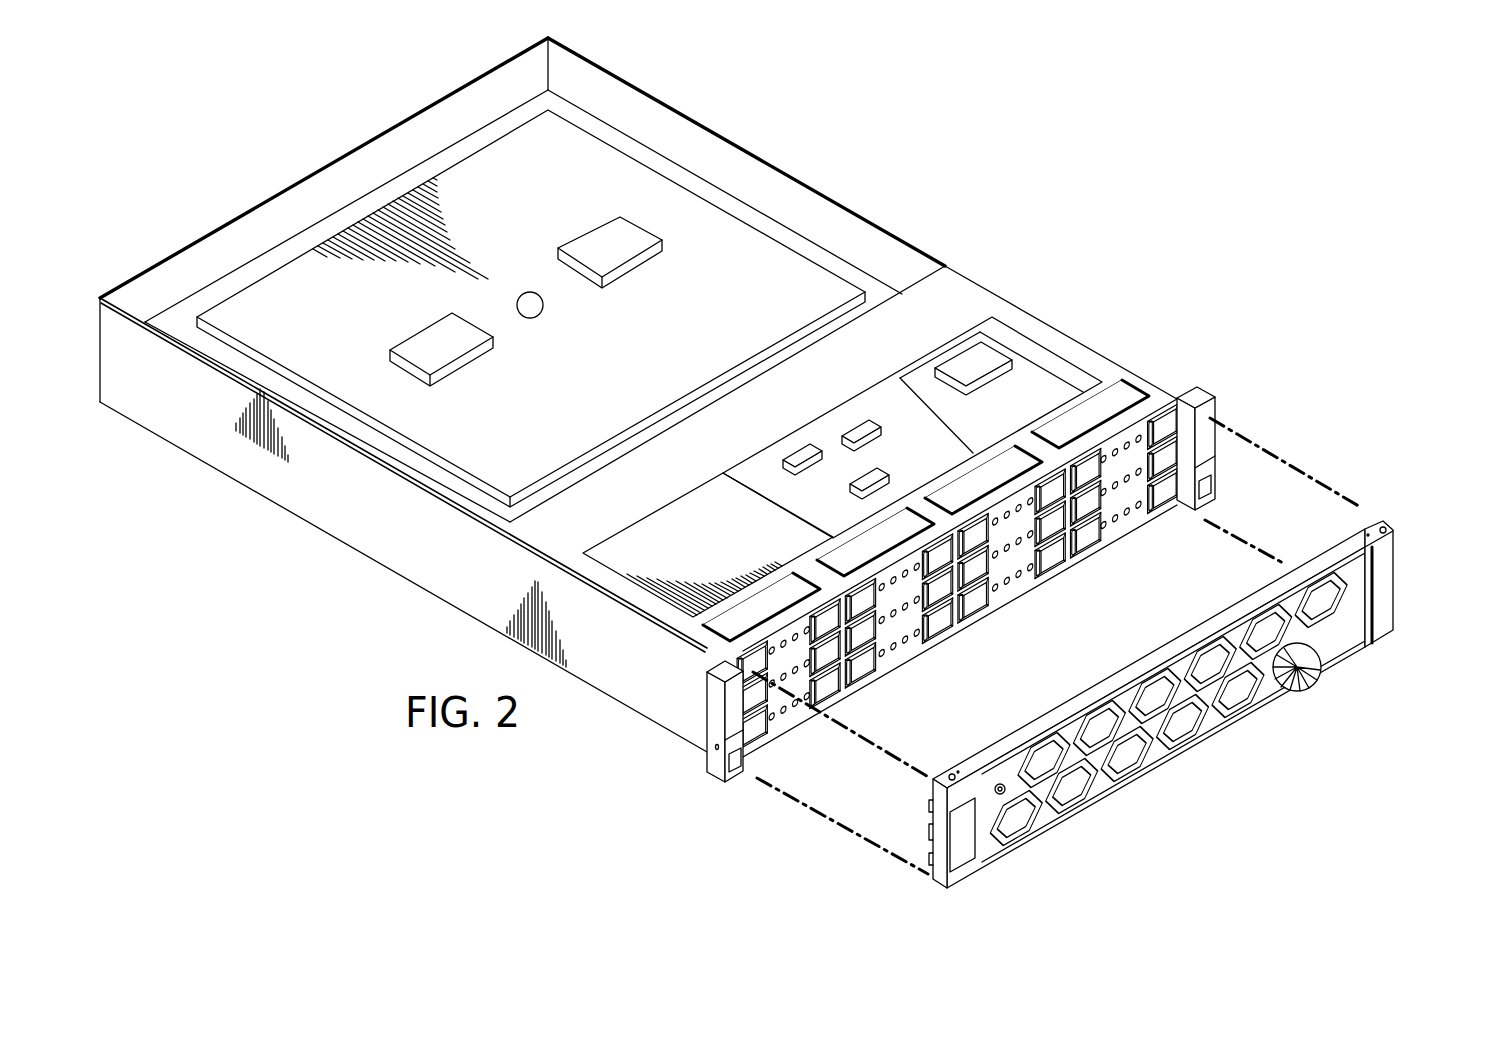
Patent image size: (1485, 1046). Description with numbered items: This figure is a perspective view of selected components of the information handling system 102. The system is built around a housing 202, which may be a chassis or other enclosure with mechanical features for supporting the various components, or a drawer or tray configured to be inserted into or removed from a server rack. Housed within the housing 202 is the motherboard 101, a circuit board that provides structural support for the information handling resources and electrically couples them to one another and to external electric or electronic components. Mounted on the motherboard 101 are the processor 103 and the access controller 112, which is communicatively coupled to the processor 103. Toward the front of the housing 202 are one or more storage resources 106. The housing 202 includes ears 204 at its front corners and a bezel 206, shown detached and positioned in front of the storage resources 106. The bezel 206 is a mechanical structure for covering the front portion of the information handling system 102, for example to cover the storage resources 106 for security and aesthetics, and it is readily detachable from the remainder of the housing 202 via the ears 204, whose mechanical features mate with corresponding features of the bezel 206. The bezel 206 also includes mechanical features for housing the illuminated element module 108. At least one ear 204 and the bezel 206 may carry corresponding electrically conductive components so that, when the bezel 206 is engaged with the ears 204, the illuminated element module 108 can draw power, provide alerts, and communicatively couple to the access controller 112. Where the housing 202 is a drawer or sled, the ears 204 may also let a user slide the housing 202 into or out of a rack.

The motherboard 101 is at (625, 177).
The information handling system 102 is at (990, 143).
The processor 103 is at (430, 342).
The storage resources 106 is at (1127, 555).
The illuminated element module 108 is at (1111, 653).
The access controller 112 is at (595, 240).
The housing 202 is at (747, 152).
The ears 204 is at (1190, 395).
The bezel 206 is at (1395, 578).